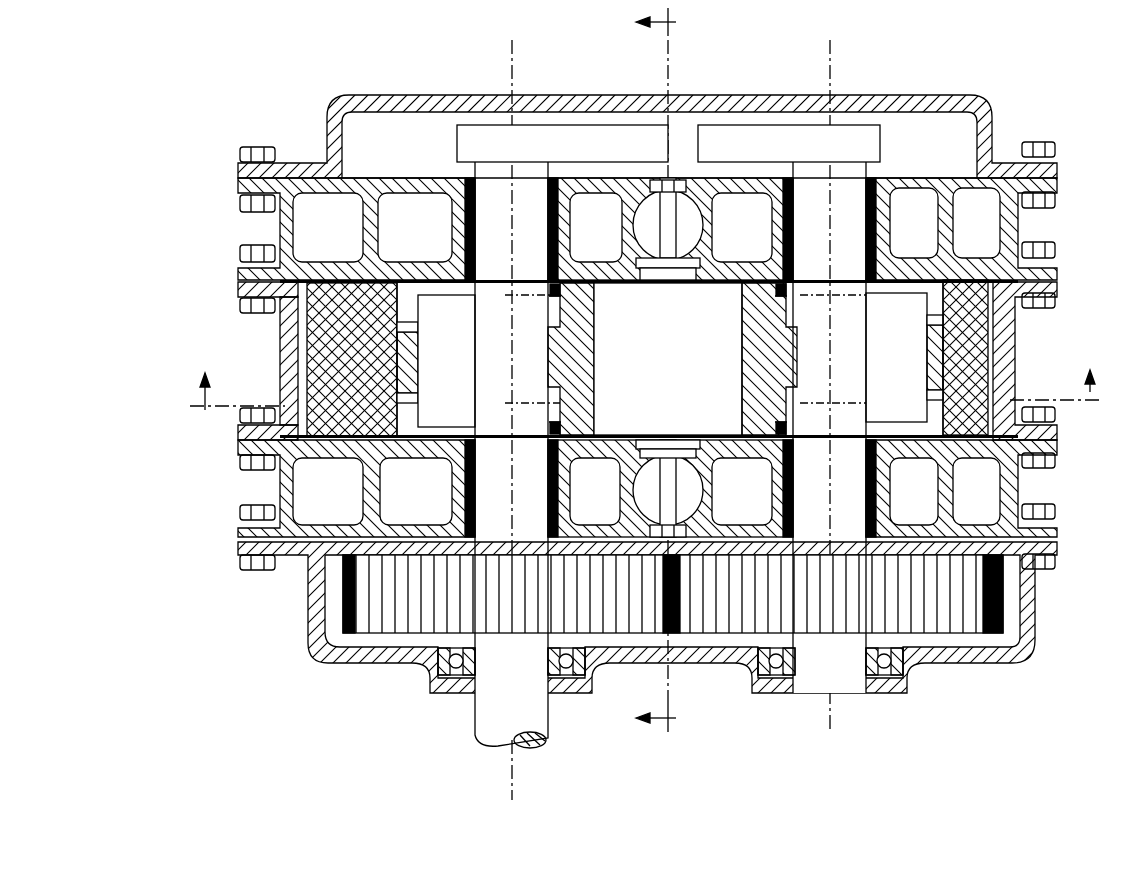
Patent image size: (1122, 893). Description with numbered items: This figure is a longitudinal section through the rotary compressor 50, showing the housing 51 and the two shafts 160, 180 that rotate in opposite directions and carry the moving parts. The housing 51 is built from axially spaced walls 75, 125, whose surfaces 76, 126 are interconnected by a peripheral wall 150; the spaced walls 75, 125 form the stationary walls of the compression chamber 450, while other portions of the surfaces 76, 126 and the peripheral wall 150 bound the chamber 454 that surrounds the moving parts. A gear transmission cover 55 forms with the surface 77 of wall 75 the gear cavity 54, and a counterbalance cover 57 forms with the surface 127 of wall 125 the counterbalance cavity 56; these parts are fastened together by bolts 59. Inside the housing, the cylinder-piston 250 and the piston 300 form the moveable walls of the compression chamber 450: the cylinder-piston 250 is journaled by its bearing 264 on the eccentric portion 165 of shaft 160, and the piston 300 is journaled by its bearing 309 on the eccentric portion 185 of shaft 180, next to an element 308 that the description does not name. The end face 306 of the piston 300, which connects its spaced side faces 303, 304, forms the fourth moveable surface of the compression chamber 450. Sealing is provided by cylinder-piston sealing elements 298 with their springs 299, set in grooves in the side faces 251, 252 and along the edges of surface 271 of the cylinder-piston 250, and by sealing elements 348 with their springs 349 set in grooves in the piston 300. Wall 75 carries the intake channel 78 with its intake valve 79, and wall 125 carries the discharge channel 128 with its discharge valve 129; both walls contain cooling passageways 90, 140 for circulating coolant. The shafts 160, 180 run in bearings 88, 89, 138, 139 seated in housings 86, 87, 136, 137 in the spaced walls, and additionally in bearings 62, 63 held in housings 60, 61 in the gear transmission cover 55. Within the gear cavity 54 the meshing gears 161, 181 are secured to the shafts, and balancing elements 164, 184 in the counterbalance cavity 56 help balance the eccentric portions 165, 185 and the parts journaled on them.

The rotary compressor 50 is at (561, 404).
The housing 51 is at (561, 376).
The counterbalance cover 57 is at (435, 100).
The counterbalance cavity 56 is at (413, 154).
The balancing element 164 is at (614, 150).
The balancing element 184 is at (779, 150).
The spaced wall 125 is at (561, 397).
The surface 127 is at (932, 178).
The cooling passageway 140 is at (293, 230).
The bearing housing 136 is at (424, 227).
The bearing 138 is at (470, 245).
The bearing housing 137 is at (909, 223).
The bearing 139 is at (880, 236).
The spaced side face 303 is at (950, 262).
The discharge channel 128 is at (669, 241).
The discharge valve 129 is at (680, 265).
The surface 126 is at (1018, 270).
The bolts 59 is at (1036, 142).
The peripheral wall 150 is at (561, 397).
The side face 252 is at (280, 312).
The side face 251 is at (280, 432).
The surface 76 is at (1018, 430).
The cylinder-piston 250 is at (320, 345).
The chamber 454 is at (330, 295).
The bearing 264 is at (418, 340).
The eccentric portion 165 is at (458, 366).
The surface 271 is at (596, 345).
The cylinder-piston sealing elements 298 is at (552, 284).
The springs 299 is at (551, 292).
The compression chamber 450 is at (700, 371).
The end face 306 is at (774, 359).
The piston rod portion 308 is at (797, 359).
The bearing 309 is at (800, 360).
The sealing elements 348 is at (786, 284).
The springs 349 is at (787, 292).
The eccentric portion 185 is at (910, 360).
The piston 300 is at (965, 350).
The intake channel 78 is at (670, 429).
The intake valve 79 is at (683, 450).
The spaced wall 75 is at (561, 397).
The bearing 88 is at (487, 488).
The bearing housing 86 is at (472, 495).
The bearing 89 is at (853, 488).
The bearing housing 87 is at (870, 495).
The cooling passageway 90 is at (296, 494).
The spaced side face 304 is at (946, 458).
The gear cavity 54 is at (561, 397).
The gear transmission cover 55 is at (561, 397).
The surface 77 is at (1030, 585).
The gear 161 is at (713, 627).
The gear 181 is at (965, 612).
The bearing 62 is at (440, 678).
The bearing housing 60 is at (588, 672).
The bearing housing 61 is at (755, 678).
The bearing 63 is at (905, 680).
The shaft 160 is at (545, 718).
The shaft 180 is at (845, 690).